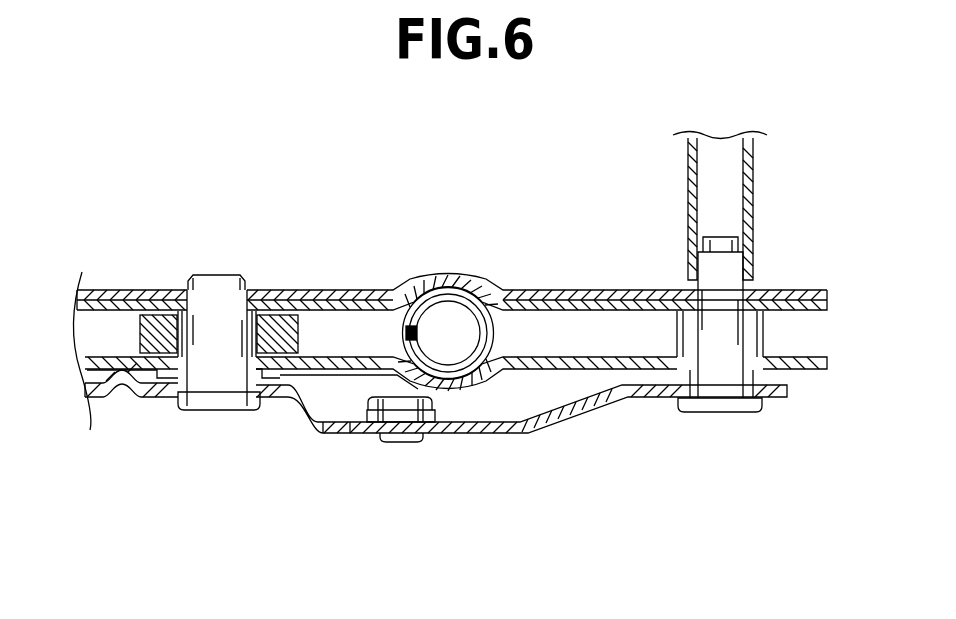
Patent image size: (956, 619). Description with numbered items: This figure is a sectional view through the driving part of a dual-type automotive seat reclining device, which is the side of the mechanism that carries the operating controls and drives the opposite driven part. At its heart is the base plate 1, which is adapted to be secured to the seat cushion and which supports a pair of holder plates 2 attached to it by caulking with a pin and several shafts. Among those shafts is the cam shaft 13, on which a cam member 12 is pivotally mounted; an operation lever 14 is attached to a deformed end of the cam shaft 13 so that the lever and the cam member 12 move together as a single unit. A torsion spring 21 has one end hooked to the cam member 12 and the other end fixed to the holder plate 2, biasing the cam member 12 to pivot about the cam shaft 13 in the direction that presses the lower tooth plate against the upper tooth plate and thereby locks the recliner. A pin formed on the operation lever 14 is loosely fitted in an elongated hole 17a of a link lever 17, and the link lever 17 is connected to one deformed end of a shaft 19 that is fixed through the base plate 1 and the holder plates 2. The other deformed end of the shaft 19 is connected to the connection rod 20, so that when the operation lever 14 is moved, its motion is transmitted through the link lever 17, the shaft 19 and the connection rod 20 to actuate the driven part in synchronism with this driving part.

The base plate 1 is at (350, 289).
The holder plates 2 is at (590, 307).
The cam member 12 is at (152, 323).
The cam shaft 13 is at (222, 412).
The operation lever 14 is at (87, 400).
The link lever 17 is at (571, 422).
The elongated hole 17a is at (366, 430).
The shaft 19 is at (409, 443).
The connection rod 20 is at (757, 183).
The torsion spring 21 is at (447, 297).